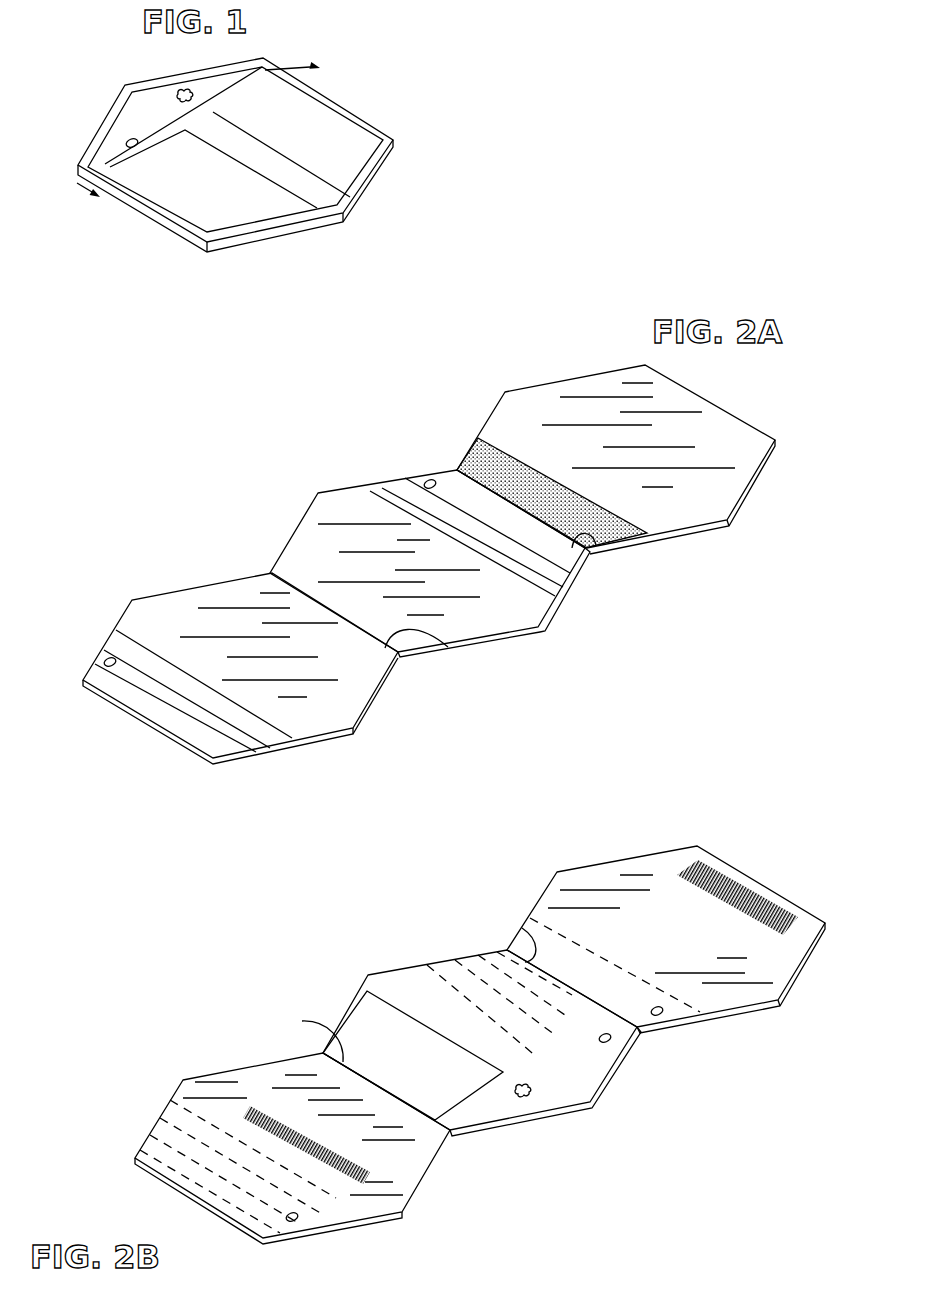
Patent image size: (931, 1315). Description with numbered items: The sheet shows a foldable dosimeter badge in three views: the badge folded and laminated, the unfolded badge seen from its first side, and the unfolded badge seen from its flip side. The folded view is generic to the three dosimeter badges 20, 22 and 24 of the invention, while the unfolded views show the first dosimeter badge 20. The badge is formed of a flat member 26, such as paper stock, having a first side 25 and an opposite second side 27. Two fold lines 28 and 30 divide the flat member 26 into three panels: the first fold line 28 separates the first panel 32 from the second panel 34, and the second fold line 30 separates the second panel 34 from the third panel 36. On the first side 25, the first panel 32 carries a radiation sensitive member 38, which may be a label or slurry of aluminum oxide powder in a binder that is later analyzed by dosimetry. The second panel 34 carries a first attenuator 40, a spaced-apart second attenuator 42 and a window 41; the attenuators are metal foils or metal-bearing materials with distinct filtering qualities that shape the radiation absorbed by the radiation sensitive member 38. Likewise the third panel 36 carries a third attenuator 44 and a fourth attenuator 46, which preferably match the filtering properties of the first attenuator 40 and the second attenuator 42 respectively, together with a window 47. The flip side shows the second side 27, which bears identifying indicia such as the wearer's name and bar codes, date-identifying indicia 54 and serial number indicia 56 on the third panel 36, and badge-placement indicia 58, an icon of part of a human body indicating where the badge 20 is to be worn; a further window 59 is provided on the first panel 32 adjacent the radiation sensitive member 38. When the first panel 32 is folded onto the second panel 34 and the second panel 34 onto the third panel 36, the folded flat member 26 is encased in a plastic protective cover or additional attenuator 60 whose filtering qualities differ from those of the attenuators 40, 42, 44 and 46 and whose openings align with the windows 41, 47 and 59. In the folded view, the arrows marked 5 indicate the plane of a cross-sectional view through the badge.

In FIG. 1, the section line 5- 5 is at (210, 147).
In FIG. 1, the first dosimeter badge 20 is at (253, 204).
In FIG. 2A, the first dosimeter badge 20 is at (458, 605).
In FIG. 2B, the first dosimeter badge 20 is at (467, 1042).
In FIG. 1, the second dosimeter badge 22 is at (253, 204).
In FIG. 1, the third dosimeter badge 24 is at (253, 204).
In FIG. 2A, the first side 25 is at (413, 522).
In FIG. 1, the flat member 26 is at (292, 226).
In FIG. 2A, the flat member 26 is at (545, 649).
In FIG. 2B, the flat member 26 is at (793, 996).
In FIG. 2B, the second side 27 is at (467, 1036).
In FIG. 2A, the first fold line 28 is at (556, 489).
In FIG. 2B, the first fold line 28 is at (540, 948).
In FIG. 2A, the second fold line 30 is at (405, 637).
In FIG. 2B, the second fold line 30 is at (343, 1060).
In FIG. 2A, the first panel 32 is at (645, 486).
In FIG. 2B, the first panel 32 is at (692, 932).
In FIG. 2A, the second panel 34 is at (521, 607).
In FIG. 2B, the second panel 34 is at (578, 1090).
In FIG. 2A, the third panel 36 is at (240, 701).
In FIG. 2B, the third panel 36 is at (280, 1158).
In FIG. 2A, the radiation sensitive member 38 is at (478, 456).
In FIG. 2A, the first attenuator 40 is at (453, 478).
In FIG. 2A, the window 41 is at (408, 497).
In FIG. 2B, the window 41 is at (608, 1038).
In FIG. 2A, the second attenuator 42 is at (404, 494).
In FIG. 2A, the third attenuator 44 is at (220, 747).
In FIG. 2A, the fourth attenuator 46 is at (268, 730).
In FIG. 2A, the window 47 is at (105, 656).
In FIG. 2B, the window 47 is at (296, 1215).
In FIG. 2B, the date-identifying indicia 54 is at (209, 1146).
In FIG. 2B, the serial number indicia 56 is at (188, 1157).
In FIG. 2B, the badge-placement indicia 58 is at (546, 1113).
In FIG. 2B, the window 59 is at (663, 1017).
In FIG. 1, the protective attenuator 60 is at (347, 200).